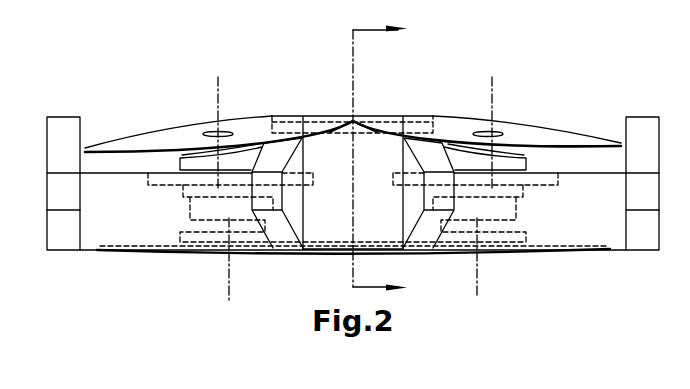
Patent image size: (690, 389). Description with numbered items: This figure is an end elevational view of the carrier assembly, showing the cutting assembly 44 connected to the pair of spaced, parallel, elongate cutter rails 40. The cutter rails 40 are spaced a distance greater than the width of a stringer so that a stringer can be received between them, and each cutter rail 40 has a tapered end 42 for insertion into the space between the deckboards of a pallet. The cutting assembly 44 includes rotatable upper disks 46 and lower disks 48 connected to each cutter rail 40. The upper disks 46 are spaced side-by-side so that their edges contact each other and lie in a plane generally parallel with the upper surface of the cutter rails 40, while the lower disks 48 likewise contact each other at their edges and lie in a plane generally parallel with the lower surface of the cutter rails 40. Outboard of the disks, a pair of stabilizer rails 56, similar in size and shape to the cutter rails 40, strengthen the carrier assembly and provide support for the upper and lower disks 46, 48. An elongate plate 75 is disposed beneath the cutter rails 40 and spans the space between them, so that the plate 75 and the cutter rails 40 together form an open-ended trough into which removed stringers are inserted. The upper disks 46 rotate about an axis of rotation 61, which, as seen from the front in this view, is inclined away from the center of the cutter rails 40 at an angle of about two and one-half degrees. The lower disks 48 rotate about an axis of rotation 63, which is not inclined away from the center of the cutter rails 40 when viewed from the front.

The cutting assembly 44 is at (439, 80).
The upper disks 46 is at (155, 130).
The axis of rotation 61 is at (218, 92).
The cutter rails 40 is at (399, 158).
The tapered end 42 is at (281, 223).
The stabilizer rails 56 is at (80, 197).
The lower disks 48 is at (167, 253).
The axis of rotation 63 is at (230, 280).
The plate 75 is at (383, 246).